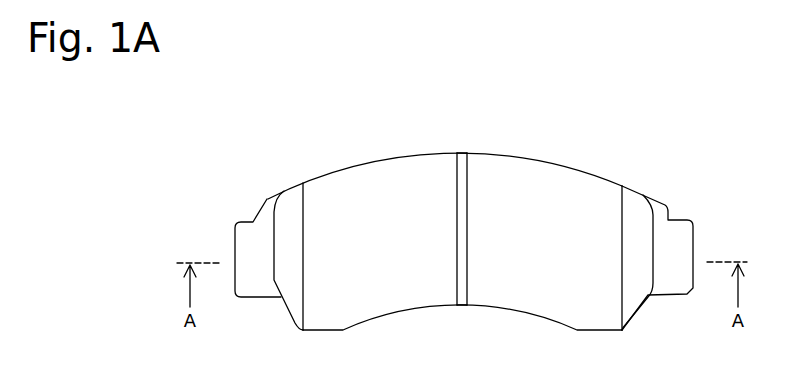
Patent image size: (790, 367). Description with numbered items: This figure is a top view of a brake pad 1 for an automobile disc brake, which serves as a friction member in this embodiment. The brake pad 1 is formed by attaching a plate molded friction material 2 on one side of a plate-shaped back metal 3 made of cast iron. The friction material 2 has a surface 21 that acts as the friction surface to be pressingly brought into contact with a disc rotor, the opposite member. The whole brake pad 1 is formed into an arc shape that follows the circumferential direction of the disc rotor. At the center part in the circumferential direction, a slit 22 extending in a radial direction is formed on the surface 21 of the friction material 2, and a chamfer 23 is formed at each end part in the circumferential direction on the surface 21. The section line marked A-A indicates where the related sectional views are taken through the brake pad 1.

The brake pad 1 is at (337, 147).
The friction material 2 is at (535, 188).
The surface 21 is at (395, 178).
The slit 22 is at (470, 180).
The chamfer 23 is at (286, 268).
The back metal 3 is at (693, 234).